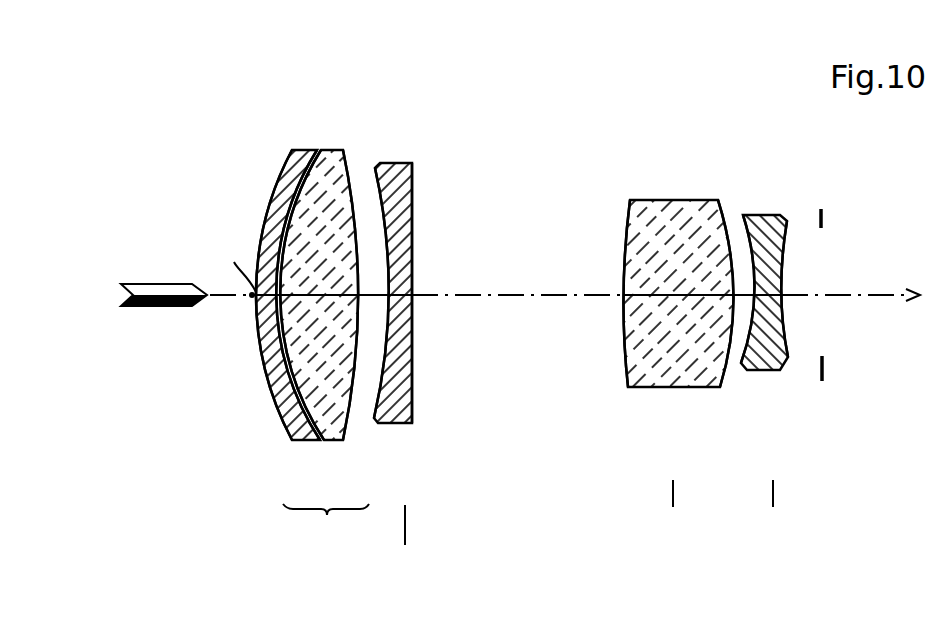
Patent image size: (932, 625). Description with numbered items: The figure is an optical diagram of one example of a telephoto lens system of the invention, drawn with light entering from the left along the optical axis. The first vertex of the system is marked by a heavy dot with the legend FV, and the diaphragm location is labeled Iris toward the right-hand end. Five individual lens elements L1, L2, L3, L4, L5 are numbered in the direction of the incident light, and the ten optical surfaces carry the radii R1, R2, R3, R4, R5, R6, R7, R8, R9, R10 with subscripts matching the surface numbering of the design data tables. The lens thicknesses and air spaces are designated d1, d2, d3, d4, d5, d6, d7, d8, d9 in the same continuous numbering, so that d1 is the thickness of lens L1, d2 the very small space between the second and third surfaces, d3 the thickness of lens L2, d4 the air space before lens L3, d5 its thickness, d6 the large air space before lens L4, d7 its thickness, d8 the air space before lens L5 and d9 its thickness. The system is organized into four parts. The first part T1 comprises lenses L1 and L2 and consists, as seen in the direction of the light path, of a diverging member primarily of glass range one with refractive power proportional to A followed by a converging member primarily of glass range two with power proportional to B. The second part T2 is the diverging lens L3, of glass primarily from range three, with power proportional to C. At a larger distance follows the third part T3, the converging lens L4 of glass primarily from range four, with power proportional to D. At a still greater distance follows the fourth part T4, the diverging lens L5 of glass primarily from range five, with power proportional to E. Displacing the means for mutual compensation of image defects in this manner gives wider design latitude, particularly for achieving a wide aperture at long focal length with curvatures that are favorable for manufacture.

The radius of first surface R1 is at (278, 181).
The radius of second surface R2 is at (312, 153).
The radius of third surface R3 is at (323, 152).
The radius of fourth surface R4 is at (343, 152).
The radius of fifth surface R5 is at (376, 185).
The radius of sixth surface R6 is at (414, 176).
The radius of seventh surface R7 is at (628, 216).
The radius of eighth surface R8 is at (720, 200).
The radius of ninth surface R9 is at (745, 222).
The radius of tenth surface R10 is at (786, 236).
The lens thickness d1 is at (269, 301).
The air space d2 is at (238, 260).
The lens thickness d3 is at (318, 298).
The air space d4 is at (373, 297).
The lens thickness d5 is at (400, 300).
The air space d6 is at (518, 297).
The lens thickness d7 is at (678, 297).
The air space d8 is at (744, 300).
The lens thickness d9 is at (768, 300).
The first lens element L1 is at (280, 289).
The second lens element L2 is at (332, 281).
The third lens element L3 is at (413, 301).
The fourth lens element L4 is at (667, 302).
The fifth lens element L5 is at (786, 311).
The first part T1 is at (327, 520).
The second part T2 is at (400, 547).
The third part T3 is at (673, 515).
The fourth part T4 is at (769, 515).
The first vertex FV is at (250, 295).
The diaphragm location Iris is at (823, 362).